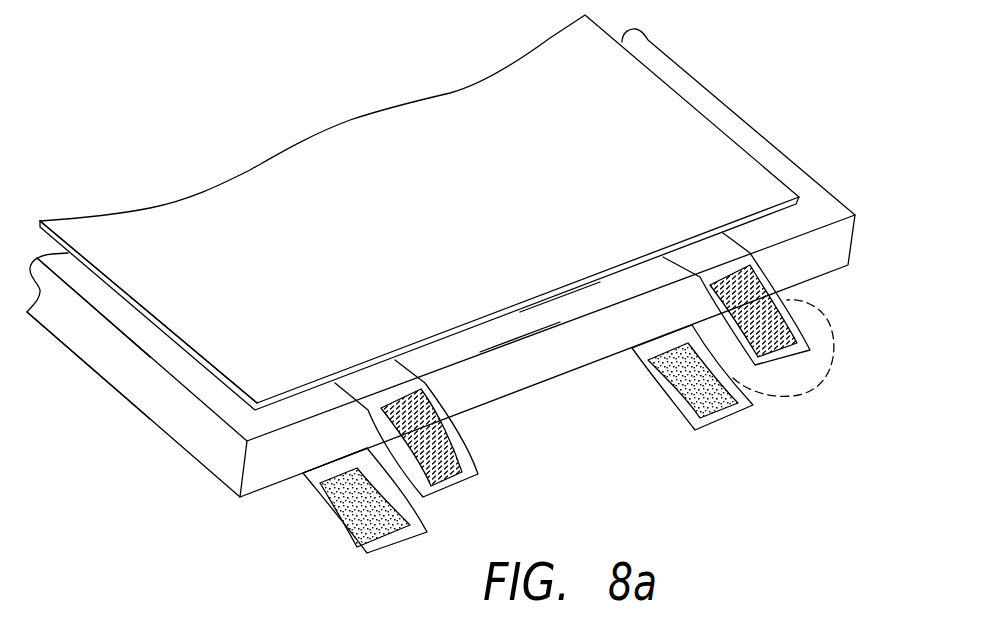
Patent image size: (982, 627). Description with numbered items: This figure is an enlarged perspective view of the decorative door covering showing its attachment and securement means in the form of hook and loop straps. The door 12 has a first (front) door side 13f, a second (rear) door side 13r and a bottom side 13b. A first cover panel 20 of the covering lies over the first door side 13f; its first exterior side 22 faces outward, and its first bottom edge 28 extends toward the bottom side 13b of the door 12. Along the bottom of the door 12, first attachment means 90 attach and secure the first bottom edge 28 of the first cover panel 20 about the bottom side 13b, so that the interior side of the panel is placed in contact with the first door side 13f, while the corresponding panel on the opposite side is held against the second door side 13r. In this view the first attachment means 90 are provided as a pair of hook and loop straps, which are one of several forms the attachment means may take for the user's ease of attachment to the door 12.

The door 12 is at (722, 108).
The first exterior side 22 is at (647, 87).
The first cover panel 20 is at (195, 368).
The first bottom edge 28 is at (552, 312).
The first door side 13f is at (130, 325).
The second door side 13r is at (132, 408).
The bottom side 13b is at (507, 375).
The first attachment means 90 is at (311, 513).